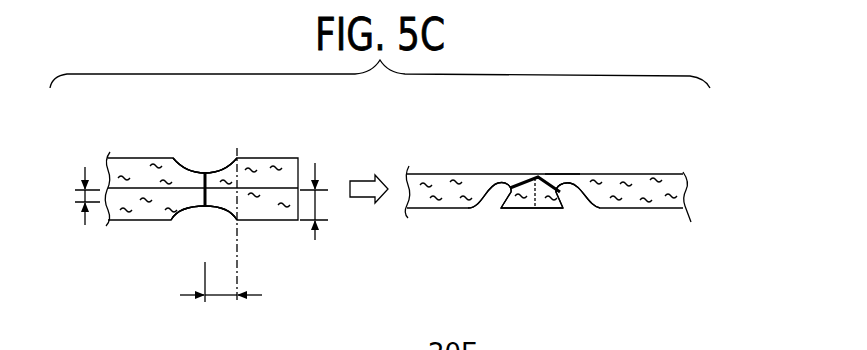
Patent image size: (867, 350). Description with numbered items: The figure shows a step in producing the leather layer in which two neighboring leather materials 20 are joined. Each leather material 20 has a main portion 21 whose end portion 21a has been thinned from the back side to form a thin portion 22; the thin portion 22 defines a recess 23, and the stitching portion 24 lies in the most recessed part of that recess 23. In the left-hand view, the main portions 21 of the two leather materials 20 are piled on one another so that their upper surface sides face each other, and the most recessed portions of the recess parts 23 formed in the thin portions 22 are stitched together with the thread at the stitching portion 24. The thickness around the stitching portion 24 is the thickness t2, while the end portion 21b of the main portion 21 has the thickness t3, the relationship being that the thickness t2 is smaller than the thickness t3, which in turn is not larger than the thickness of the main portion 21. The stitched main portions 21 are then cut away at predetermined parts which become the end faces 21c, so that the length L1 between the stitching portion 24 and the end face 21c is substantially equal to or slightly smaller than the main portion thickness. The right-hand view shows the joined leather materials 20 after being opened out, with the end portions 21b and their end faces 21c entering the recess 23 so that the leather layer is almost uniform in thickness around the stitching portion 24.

The leather material 20 is at (108, 205).
The main portion 21 is at (396, 157).
The thin portion 22 is at (192, 164).
The recess 23 is at (188, 223).
The stitching portion 24 is at (205, 186).
The end portion 21a is at (223, 157).
The end portion 21b is at (227, 200).
The end face 21c is at (238, 263).
The thickness around the stitching portion t2 is at (76, 196).
The thickness of the end portion t3 is at (316, 198).
The length between the stitching portion and the end face L1 is at (221, 297).